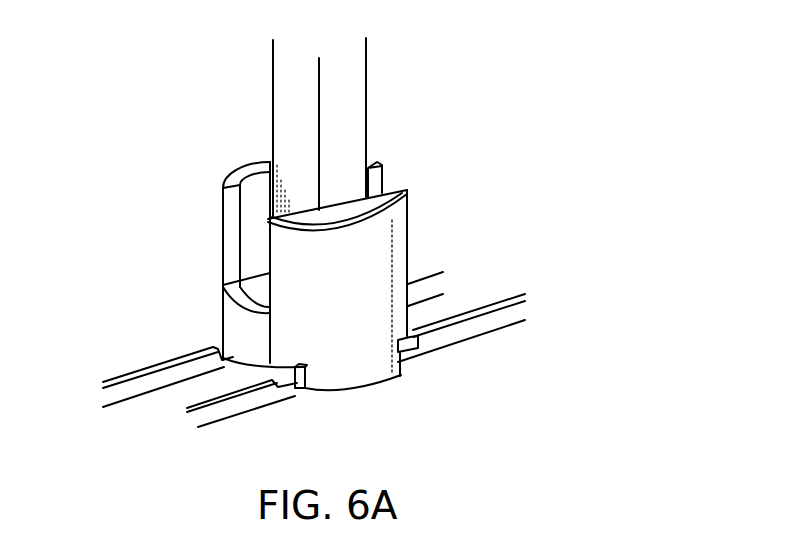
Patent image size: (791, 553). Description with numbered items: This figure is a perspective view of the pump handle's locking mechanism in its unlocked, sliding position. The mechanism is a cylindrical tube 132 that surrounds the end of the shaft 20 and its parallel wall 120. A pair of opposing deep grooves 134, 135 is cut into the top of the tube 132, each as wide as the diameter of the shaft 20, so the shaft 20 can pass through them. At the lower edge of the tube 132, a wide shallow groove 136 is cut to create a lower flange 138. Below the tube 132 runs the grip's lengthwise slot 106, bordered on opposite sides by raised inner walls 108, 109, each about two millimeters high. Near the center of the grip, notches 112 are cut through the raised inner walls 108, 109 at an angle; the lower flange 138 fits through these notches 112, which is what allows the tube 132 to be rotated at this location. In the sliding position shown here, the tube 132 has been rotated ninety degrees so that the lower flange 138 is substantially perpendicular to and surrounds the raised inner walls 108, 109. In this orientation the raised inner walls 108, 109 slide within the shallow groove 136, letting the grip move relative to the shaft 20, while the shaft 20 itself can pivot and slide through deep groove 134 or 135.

The shaft 20 is at (350, 73).
The parallel wall 120 is at (258, 175).
The deep groove 134 is at (250, 248).
The deep groove 135 is at (388, 180).
The cylindrical tube 132 is at (404, 232).
The lower flange 138 is at (375, 372).
The shallow groove 136 is at (265, 368).
The notch 112 is at (299, 391).
The raised inner wall 108 is at (142, 382).
The slot 106 is at (460, 318).
The raised inner wall 109 is at (200, 420).